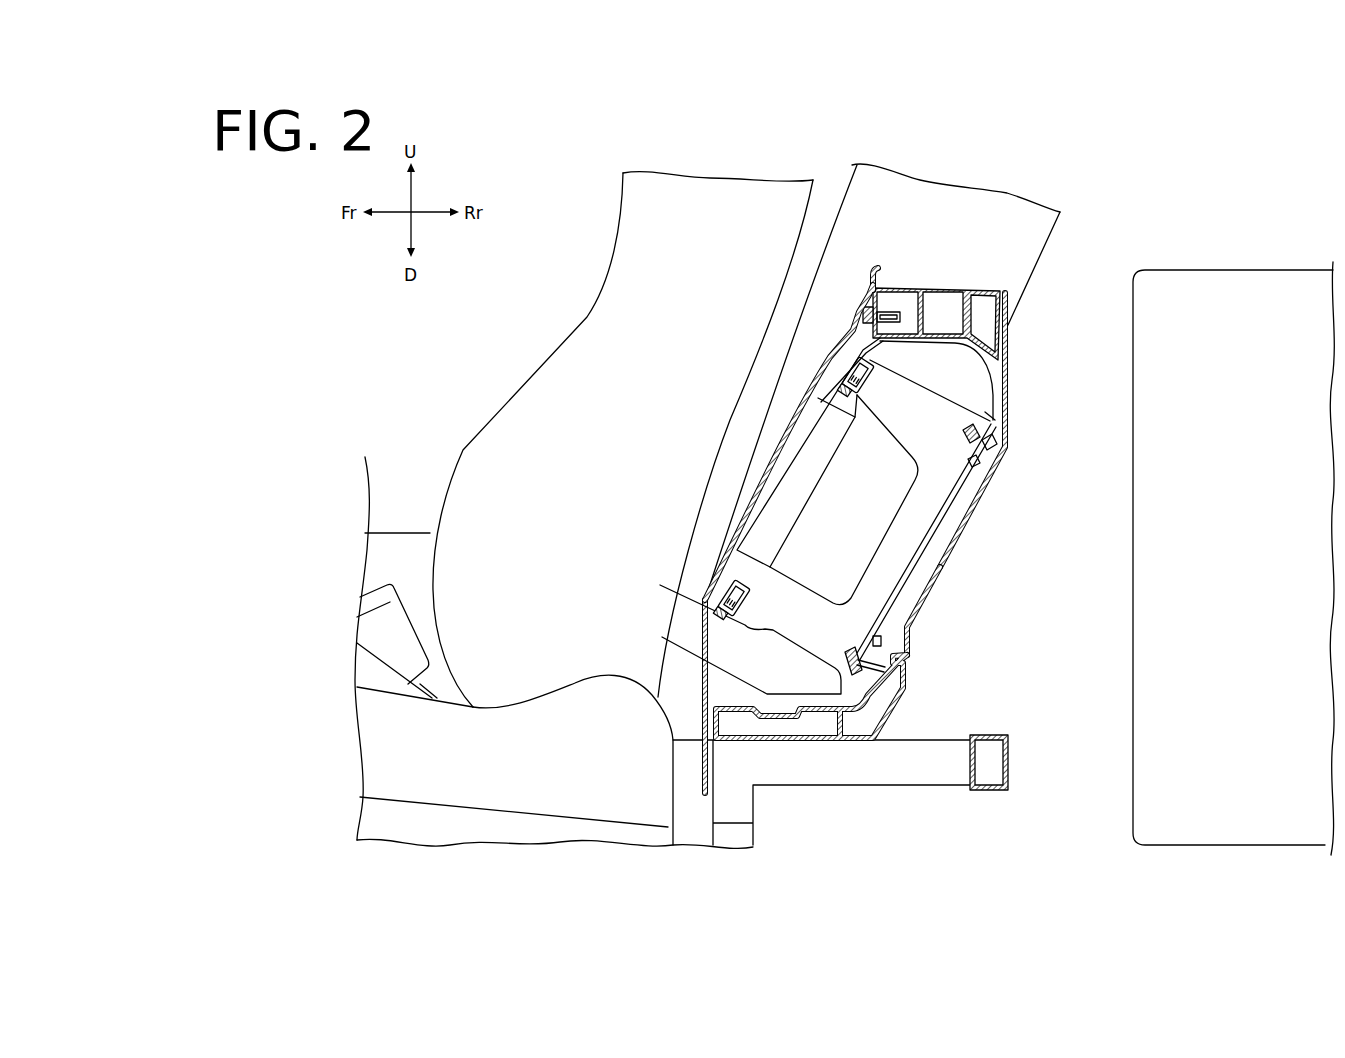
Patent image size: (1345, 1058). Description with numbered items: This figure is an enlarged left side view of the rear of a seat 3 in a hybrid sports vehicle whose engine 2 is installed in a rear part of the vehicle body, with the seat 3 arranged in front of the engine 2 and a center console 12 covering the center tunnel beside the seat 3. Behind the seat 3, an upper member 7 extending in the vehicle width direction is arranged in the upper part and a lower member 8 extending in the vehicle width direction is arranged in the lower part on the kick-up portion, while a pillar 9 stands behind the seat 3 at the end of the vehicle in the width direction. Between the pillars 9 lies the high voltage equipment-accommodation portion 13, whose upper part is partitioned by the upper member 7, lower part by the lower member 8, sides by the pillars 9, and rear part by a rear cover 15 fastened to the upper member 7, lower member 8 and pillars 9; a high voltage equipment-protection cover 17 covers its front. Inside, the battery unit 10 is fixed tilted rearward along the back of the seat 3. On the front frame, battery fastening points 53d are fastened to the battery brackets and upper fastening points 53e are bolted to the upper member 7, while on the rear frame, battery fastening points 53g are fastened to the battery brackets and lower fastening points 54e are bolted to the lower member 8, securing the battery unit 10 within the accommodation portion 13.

The engine 2 is at (1227, 268).
The seat 3 is at (541, 405).
The upper member 7 is at (945, 287).
The lower member 8 is at (893, 710).
The pillar 9 is at (916, 203).
The battery unit 10 is at (963, 481).
The center console 12 is at (402, 533).
The high voltage equipment-accommodation portion 13 is at (968, 535).
The rear cover 15 is at (922, 602).
The high voltage equipment-protection cover 17 is at (786, 434).
The battery fastening point 53d is at (845, 374).
The upper fastening point 53e is at (862, 314).
The battery fastening point 53g is at (989, 420).
The lower fastening point 54e is at (877, 642).